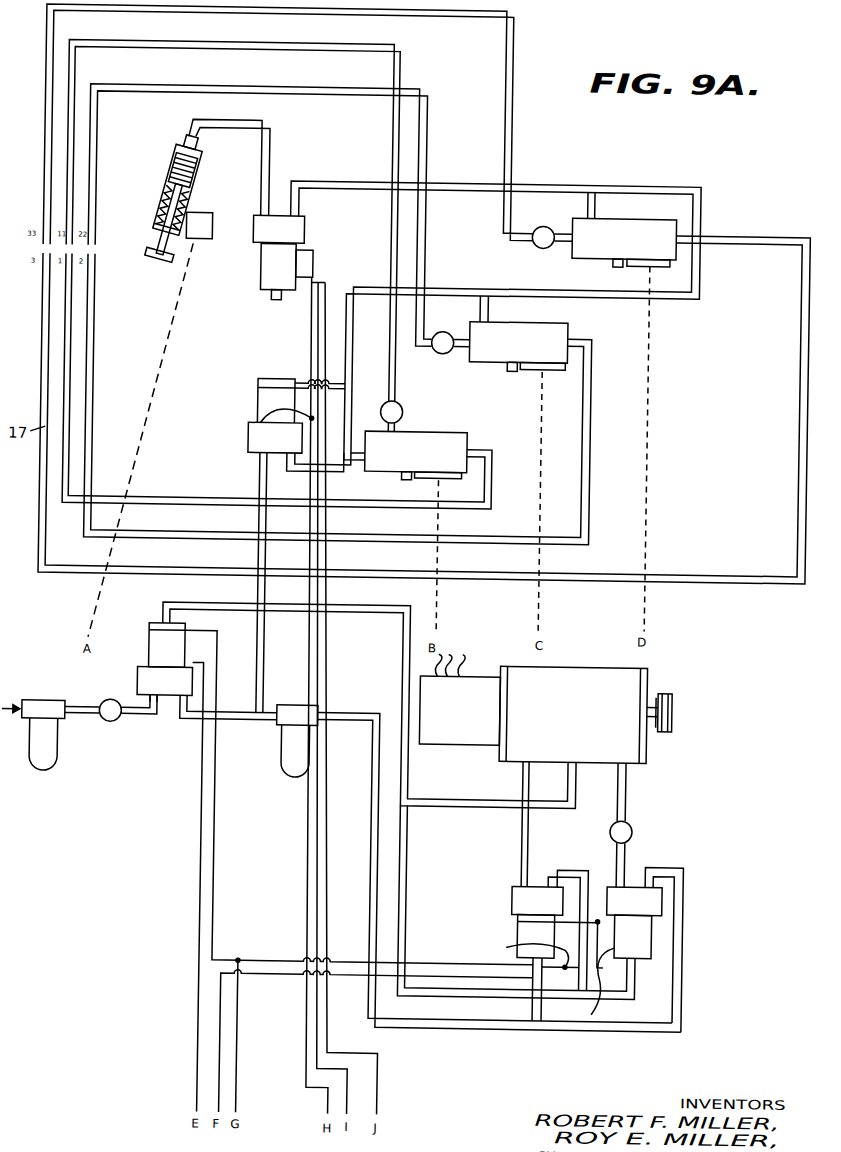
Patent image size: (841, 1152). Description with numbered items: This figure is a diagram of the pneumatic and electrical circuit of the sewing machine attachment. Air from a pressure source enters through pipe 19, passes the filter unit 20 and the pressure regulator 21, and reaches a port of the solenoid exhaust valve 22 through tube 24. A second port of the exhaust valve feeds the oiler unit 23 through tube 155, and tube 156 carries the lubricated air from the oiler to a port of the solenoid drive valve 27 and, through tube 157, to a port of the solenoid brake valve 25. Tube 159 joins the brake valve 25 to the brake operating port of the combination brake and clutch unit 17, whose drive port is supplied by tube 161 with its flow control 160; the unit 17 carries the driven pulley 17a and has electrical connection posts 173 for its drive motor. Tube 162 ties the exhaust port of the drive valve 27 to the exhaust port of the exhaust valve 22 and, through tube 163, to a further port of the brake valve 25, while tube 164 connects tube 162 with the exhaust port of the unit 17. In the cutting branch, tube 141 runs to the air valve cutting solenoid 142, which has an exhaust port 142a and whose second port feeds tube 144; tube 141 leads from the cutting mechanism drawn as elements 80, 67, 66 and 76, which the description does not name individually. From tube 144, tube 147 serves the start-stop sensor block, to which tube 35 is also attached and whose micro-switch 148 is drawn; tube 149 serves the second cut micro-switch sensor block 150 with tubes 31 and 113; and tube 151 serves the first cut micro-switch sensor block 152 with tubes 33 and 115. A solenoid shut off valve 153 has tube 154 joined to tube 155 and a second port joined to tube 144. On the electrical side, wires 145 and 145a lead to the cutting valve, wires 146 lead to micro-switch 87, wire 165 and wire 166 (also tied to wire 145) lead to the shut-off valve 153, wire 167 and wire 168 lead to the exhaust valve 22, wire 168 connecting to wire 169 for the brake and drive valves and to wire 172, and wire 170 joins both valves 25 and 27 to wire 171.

The tube 35 is at (38, 157).
The tube 33 is at (63, 173).
The tube 31 is at (90, 170).
The tube 113 is at (91, 396).
The tube 115 is at (63, 389).
The tube 141 is at (268, 145).
The tube 144 is at (326, 186).
The tube 147 is at (594, 206).
The micro-switch 148 is at (652, 214).
The tube 149 is at (486, 311).
The second cut micro-switch sensor block 150 is at (486, 357).
The first cut micro-switch sensor block 152 is at (429, 438).
The tube 151 is at (349, 460).
The solenoid cutting valve 142 is at (266, 273).
The exhaust port 142a is at (269, 302).
The wire 145 is at (309, 275).
The wire 145a is at (318, 329).
The pneumatic cylinder 80 is at (162, 205).
The piston 67 is at (192, 191).
The piston rod 66 is at (190, 211).
The cutting foot 76 is at (147, 268).
The micro-switch 87 is at (205, 232).
The wires 146 is at (118, 494).
The solenoid shut off valve 153 is at (260, 406).
The wire 166 is at (253, 433).
The tube 154 is at (267, 674).
The pipe 19 is at (16, 710).
The filter unit 20 is at (62, 760).
The pressure regulator 21 is at (125, 727).
The tube 24 is at (150, 705).
The solenoid exhaust valve 22 is at (158, 649).
The tube 155 is at (194, 728).
The oiler unit 23 is at (291, 759).
The tube 164 is at (449, 804).
The tube 162 is at (638, 985).
The tube 163 is at (575, 868).
The combination brake and clutch unit 17 is at (574, 678).
The driven pulley 17a is at (676, 706).
The electrical connection posts 173 is at (455, 676).
The tube 159 is at (524, 835).
The tube 161 is at (631, 800).
The flow control 160 is at (638, 827).
The solenoid brake valve 25 is at (524, 921).
The solenoid drive valve 27 is at (656, 932).
The wire 169 is at (512, 946).
The wire 171 is at (613, 986).
The wire 170 is at (604, 912).
The tube 157 is at (540, 1012).
The tube 156 is at (374, 808).
The wire 168 is at (224, 845).
The wire 172 is at (247, 1051).
The wire 167 is at (207, 888).
The wire 165 is at (395, 1078).